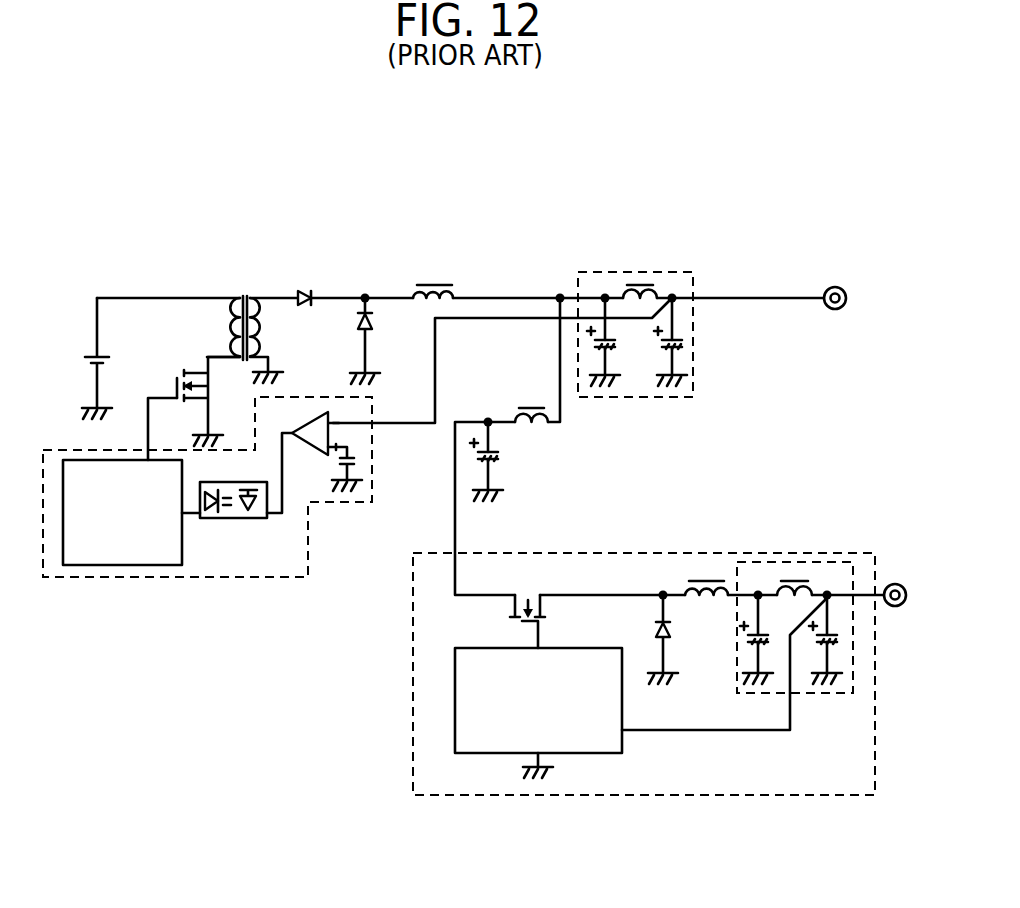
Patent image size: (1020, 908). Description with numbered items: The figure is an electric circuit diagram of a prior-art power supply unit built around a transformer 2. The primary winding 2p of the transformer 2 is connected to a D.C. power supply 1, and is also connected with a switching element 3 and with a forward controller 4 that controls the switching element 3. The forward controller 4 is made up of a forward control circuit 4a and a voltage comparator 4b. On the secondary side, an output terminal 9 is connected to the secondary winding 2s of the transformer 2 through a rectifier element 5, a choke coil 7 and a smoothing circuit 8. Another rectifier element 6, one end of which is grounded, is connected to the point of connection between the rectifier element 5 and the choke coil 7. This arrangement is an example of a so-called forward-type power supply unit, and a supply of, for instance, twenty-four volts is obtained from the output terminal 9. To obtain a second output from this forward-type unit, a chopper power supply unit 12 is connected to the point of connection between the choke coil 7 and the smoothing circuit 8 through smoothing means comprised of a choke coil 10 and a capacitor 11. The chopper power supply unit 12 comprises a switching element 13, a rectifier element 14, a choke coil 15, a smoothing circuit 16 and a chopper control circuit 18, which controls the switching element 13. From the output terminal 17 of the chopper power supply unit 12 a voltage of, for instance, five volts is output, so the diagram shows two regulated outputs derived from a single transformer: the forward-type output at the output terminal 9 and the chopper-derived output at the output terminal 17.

The D.C. power supply 1 is at (85, 338).
The transformer 2 is at (239, 302).
The primary winding 2p is at (228, 305).
The secondary winding 2s is at (258, 300).
The switching element 3 is at (183, 372).
The forward controller 4 is at (207, 523).
The forward control circuit 4a is at (168, 567).
The voltage comparator 4b is at (313, 448).
The rectifier element 5 is at (303, 292).
The rectifier element 6 is at (357, 317).
The choke coil 7 is at (435, 275).
The smoothing circuit 8 is at (642, 272).
The output terminal 9 is at (830, 287).
The choke coil 10 is at (528, 402).
The capacitor 11 is at (465, 433).
The chopper power supply unit 12 is at (599, 679).
The switching element 13 is at (528, 593).
The rectifier element 14 is at (668, 642).
The choke coil 15 is at (707, 568).
The smoothing circuit 16 is at (782, 562).
The output terminal 17 is at (898, 583).
The chopper control circuit 18 is at (480, 753).